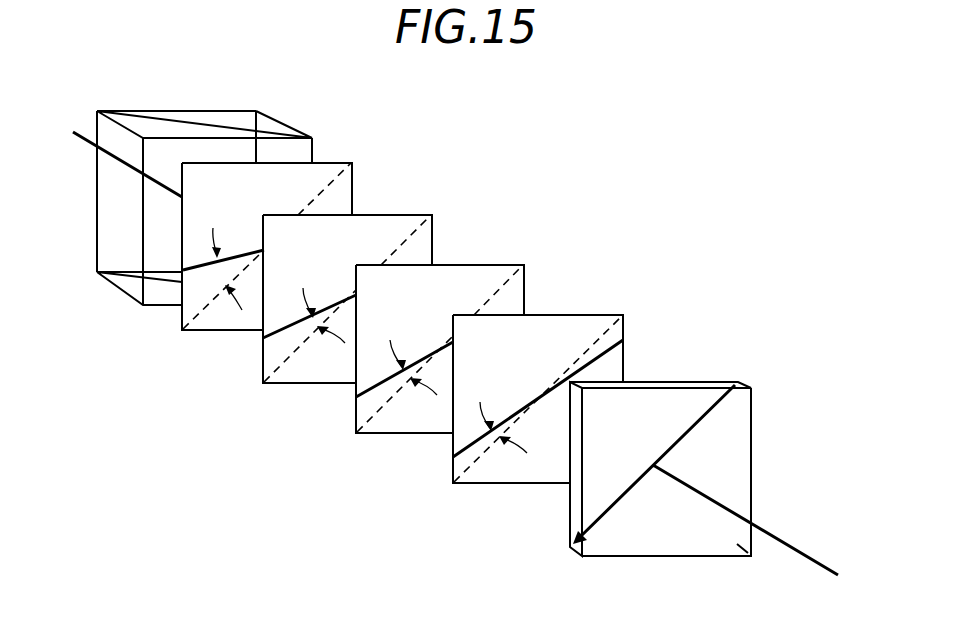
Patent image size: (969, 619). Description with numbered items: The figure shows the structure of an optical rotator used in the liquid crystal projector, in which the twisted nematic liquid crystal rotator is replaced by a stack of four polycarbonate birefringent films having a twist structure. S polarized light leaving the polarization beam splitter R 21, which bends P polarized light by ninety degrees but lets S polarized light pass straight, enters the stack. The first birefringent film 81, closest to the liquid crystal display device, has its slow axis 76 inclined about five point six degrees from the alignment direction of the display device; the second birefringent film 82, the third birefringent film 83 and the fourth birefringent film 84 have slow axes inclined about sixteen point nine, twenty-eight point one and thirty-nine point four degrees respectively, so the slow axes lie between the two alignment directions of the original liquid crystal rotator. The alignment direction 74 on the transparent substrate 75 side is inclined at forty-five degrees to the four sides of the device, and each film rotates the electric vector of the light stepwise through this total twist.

The polarization beam splitter R 21 is at (204, 217).
The slow axis 76 is at (200, 265).
The retardation plate 84 is at (195, 332).
The retardation plate 83 is at (270, 383).
The second birefringent film 82 is at (367, 435).
The first birefringent film 81 is at (473, 490).
The alignment direction 74 is at (603, 520).
The transparent substrate 75 is at (666, 572).